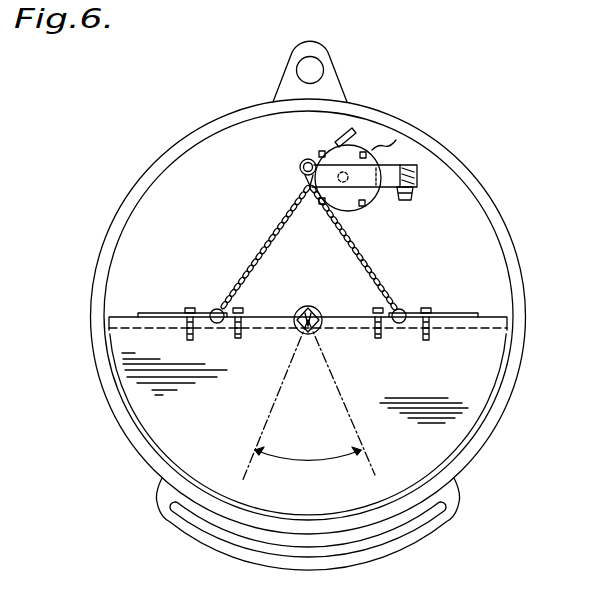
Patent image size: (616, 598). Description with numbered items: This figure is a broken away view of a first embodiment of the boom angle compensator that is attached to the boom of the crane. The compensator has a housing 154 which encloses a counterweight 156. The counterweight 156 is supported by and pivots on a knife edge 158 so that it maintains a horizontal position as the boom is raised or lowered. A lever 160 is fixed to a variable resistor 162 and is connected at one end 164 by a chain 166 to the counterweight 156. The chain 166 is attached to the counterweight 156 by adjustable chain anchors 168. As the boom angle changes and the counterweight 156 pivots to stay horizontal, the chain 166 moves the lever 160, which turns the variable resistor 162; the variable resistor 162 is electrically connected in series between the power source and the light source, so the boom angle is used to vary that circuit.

The housing 154 is at (117, 214).
The counterweight 156 is at (496, 386).
The knife edge 158 is at (306, 311).
The lever 160 is at (398, 168).
The variable resistor 162 is at (323, 152).
The end of lever 164 is at (330, 172).
The chain 166 is at (270, 238).
The adjustable chain anchors 168 is at (172, 312).